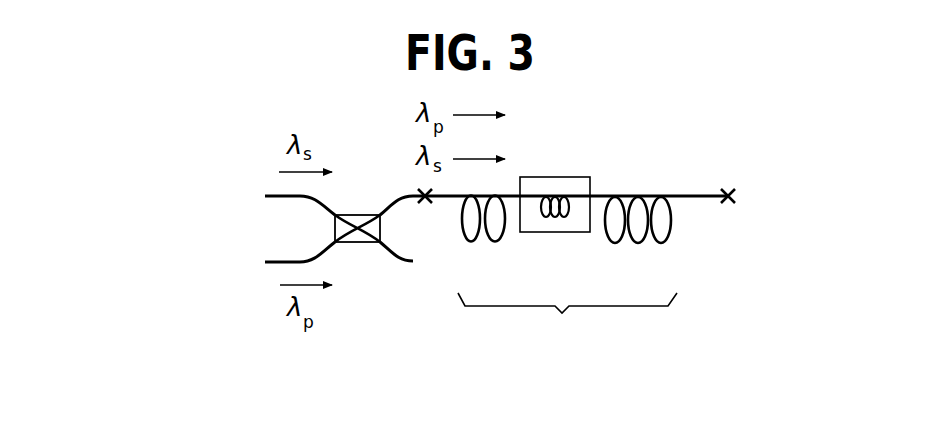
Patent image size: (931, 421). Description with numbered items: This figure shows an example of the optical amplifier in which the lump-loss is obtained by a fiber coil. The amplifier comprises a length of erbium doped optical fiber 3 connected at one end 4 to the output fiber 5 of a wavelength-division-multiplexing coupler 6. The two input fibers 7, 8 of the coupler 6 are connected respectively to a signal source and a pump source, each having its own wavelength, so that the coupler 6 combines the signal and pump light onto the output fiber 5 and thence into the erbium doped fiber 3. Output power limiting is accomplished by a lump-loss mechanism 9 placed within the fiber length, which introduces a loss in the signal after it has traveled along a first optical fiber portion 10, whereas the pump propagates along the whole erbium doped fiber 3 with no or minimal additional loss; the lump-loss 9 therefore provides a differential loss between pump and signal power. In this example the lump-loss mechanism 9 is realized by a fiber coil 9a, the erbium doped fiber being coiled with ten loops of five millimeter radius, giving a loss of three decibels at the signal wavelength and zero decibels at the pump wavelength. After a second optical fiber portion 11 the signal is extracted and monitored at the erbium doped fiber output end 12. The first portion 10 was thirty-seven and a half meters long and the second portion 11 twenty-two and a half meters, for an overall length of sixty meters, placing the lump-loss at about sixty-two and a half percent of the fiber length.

The erbium doped optical fiber 3 is at (567, 323).
The end 4 is at (424, 203).
The output fiber 5 is at (400, 191).
The wavelength-division-multiplexing coupler 6 is at (369, 257).
The input fiber 7 is at (274, 194).
The input fiber 8 is at (274, 264).
The lump-loss mechanism 9 is at (566, 176).
The fiber coil 9a is at (566, 214).
The first optical fiber portion 10 is at (494, 242).
The second optical fiber portion 11 is at (658, 243).
The output end 12 is at (731, 189).